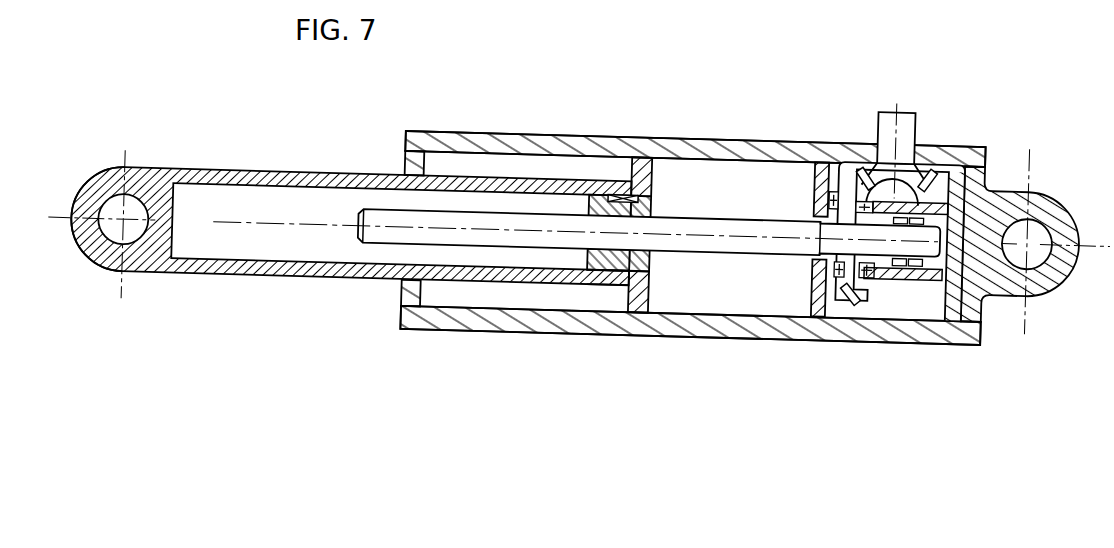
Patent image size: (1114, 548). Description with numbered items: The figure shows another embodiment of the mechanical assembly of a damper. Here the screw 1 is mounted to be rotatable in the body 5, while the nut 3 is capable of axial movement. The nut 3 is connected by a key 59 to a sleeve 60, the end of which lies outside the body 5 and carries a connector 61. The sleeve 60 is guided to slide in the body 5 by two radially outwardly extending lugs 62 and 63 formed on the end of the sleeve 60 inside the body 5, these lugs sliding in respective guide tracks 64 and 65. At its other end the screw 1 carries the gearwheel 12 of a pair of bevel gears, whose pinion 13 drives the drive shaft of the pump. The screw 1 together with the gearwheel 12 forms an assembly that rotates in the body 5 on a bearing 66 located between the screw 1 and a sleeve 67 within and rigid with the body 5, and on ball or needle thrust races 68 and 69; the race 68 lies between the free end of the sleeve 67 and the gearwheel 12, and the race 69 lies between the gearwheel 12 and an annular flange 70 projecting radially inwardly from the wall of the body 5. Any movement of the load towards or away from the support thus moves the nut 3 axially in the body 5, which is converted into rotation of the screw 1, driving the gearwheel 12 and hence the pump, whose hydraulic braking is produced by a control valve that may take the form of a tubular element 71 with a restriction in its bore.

The screw 1 is at (692, 244).
The nut 3 is at (588, 284).
The body 5 is at (703, 150).
The gearwheel 12 is at (856, 302).
The pinion 13 is at (928, 188).
The key 59 is at (612, 190).
The sleeve 60 is at (221, 173).
The connector 61 is at (92, 190).
The lug 62 is at (632, 190).
The lug 63 is at (641, 310).
The guide track 64 is at (468, 150).
The guide track 65 is at (460, 303).
The bearing 66 is at (935, 278).
The sleeve 67 is at (904, 278).
The thrust race 68 is at (867, 278).
The thrust race 69 is at (818, 279).
The annular flange 70 is at (818, 200).
The tubular element 71 is at (902, 130).